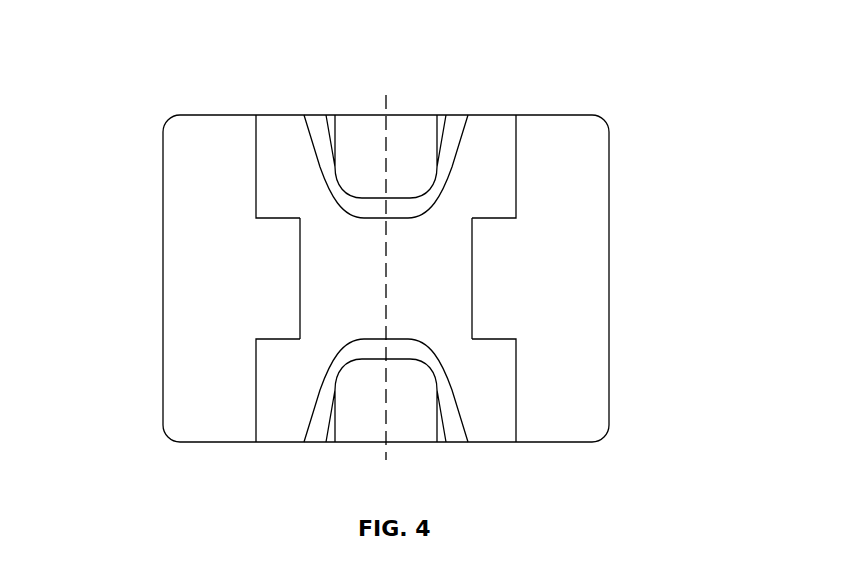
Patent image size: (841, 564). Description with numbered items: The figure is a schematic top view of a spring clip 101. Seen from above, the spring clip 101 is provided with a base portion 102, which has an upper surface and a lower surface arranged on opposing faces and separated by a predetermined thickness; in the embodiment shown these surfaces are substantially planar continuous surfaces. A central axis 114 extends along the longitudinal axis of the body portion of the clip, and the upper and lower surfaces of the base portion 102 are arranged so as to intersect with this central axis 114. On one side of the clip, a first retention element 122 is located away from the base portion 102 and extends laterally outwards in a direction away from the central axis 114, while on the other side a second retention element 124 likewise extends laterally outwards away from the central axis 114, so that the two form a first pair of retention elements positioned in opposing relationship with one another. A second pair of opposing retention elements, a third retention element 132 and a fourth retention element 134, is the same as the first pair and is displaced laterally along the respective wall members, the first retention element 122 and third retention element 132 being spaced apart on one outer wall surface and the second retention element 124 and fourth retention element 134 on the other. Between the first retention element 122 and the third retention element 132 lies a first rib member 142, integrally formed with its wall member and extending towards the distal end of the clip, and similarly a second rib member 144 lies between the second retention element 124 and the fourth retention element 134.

The spring clip 101 is at (136, 72).
The base portion 102 is at (196, 320).
The central axis 114 is at (386, 107).
The first retention element 122 is at (278, 388).
The second retention element 124 is at (495, 392).
The third retention element 132 is at (283, 167).
The fourth retention element 134 is at (500, 170).
The first rib member 142 is at (300, 259).
The second rib member 144 is at (472, 255).